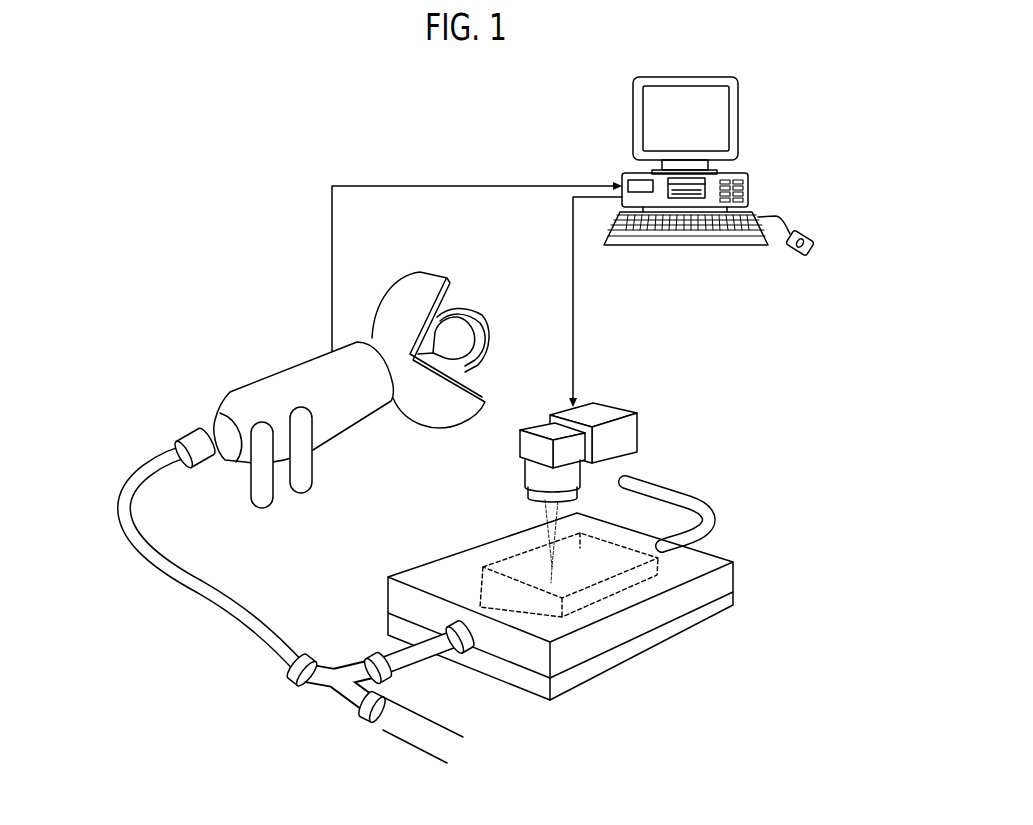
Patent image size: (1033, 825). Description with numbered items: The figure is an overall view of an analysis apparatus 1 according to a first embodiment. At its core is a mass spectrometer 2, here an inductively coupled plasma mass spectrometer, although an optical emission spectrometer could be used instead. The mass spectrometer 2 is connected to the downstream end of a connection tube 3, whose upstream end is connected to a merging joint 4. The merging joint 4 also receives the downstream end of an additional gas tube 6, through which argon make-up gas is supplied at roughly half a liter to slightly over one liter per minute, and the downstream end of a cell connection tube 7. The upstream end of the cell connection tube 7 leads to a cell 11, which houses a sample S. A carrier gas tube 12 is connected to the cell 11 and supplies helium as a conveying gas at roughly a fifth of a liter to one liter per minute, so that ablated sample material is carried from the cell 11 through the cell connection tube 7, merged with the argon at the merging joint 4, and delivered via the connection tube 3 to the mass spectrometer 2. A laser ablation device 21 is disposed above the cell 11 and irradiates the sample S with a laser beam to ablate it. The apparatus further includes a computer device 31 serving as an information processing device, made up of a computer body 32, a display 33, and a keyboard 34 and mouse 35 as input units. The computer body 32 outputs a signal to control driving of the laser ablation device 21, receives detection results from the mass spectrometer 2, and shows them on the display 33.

The analysis apparatus 1 is at (92, 389).
The mass spectrometer 2 is at (347, 427).
The connection tube 3 is at (187, 593).
The merging joint 4 is at (337, 690).
The additional gas tube 6 is at (432, 727).
The cell connection tube 7 is at (410, 650).
The cell 11 is at (457, 562).
The carrier gas tube 12 is at (683, 498).
The laser ablation device 21 is at (610, 413).
The computer device 31 is at (719, 211).
The computer body 32 is at (748, 185).
The display 33 is at (720, 110).
The keyboard 34 is at (697, 245).
The mouse 35 is at (800, 236).